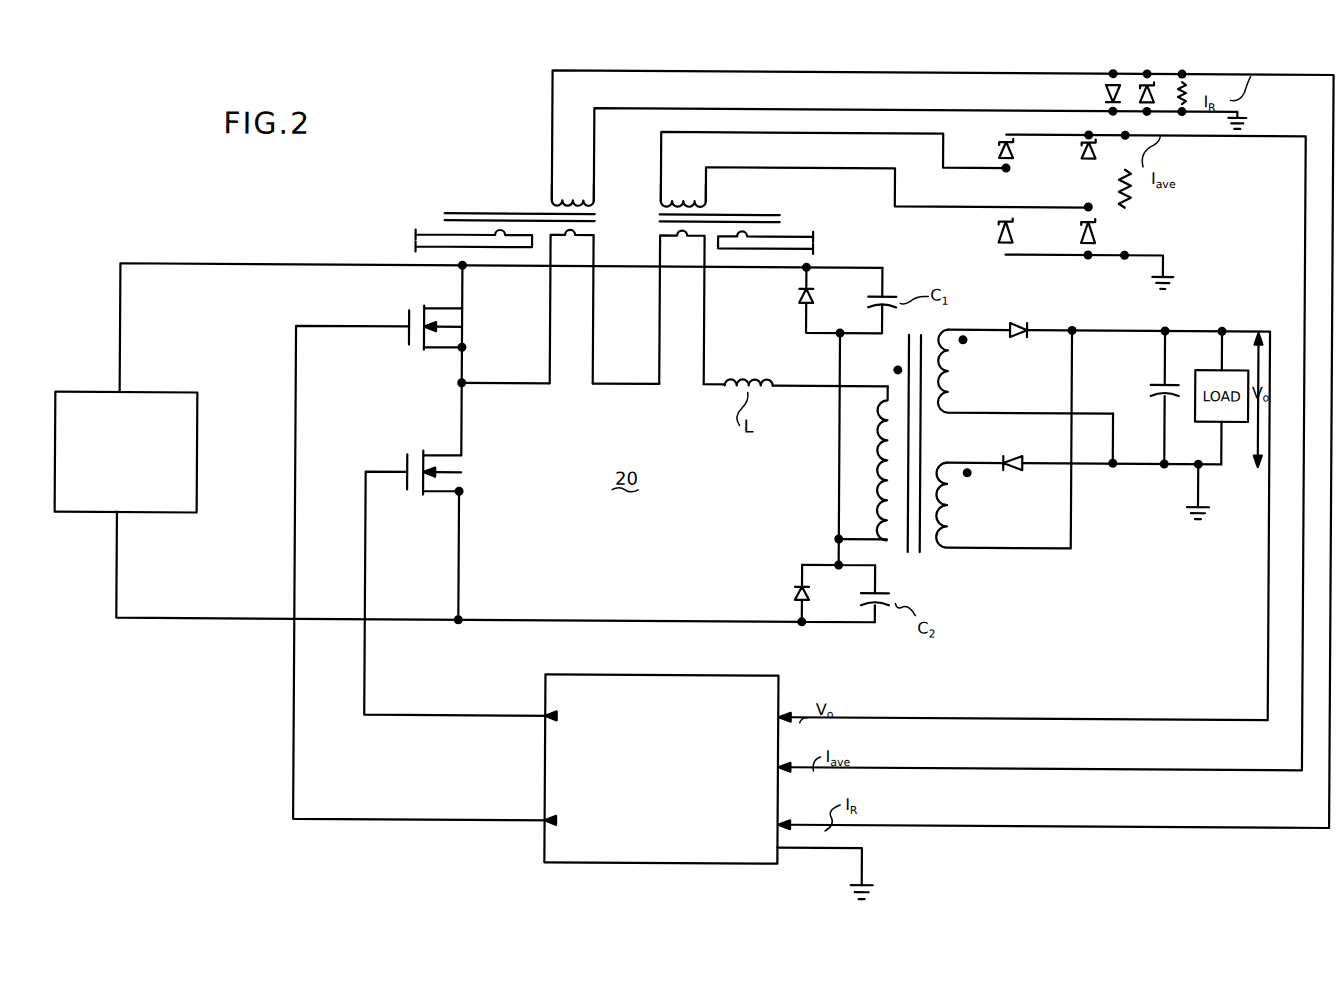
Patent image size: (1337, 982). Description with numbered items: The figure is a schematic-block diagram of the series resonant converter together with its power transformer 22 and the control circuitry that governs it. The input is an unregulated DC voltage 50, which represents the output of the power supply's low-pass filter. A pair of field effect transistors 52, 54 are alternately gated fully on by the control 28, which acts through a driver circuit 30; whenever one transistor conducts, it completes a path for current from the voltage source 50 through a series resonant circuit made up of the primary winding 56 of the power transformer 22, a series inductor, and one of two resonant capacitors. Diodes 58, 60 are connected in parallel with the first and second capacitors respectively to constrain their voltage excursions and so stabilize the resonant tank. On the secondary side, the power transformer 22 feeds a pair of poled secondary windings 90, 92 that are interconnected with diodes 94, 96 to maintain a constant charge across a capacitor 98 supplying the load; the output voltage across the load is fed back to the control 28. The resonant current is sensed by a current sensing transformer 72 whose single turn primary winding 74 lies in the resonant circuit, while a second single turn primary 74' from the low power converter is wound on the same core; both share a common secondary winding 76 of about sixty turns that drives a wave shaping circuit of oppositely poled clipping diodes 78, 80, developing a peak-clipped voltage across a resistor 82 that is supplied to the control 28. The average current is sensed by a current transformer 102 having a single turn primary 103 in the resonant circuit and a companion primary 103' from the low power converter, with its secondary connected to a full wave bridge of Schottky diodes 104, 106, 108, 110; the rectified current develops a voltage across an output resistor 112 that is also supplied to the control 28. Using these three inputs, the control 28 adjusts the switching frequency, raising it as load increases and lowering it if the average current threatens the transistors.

The power transformer 22 is at (922, 554).
The control 28 is at (661, 752).
The driver circuit 30 is at (644, 686).
The unregulated DC voltage 50 is at (90, 500).
The field effect transistor 52 is at (460, 315).
The field effect transistor 54 is at (461, 462).
The primary winding 56 is at (875, 460).
The diode 58 is at (799, 293).
The diode 60 is at (797, 587).
The current sensing transformer 72 is at (541, 207).
The single turn primary winding 74 is at (572, 307).
The single turn primary winding 74' is at (473, 264).
The secondary winding 76 is at (571, 201).
The clipping diode 78 is at (1106, 88).
The clipping diode 80 is at (1140, 78).
The resistor 82 is at (1180, 83).
The secondary winding 90 is at (958, 504).
The secondary winding 92 is at (960, 364).
The diode 94 is at (1022, 314).
The diode 96 is at (1013, 449).
The capacitor 98 is at (1152, 381).
The current transformer 102 is at (711, 201).
The single turn primary 103 is at (682, 307).
The single turn primary winding 103' is at (765, 264).
The Schottky diode 104 is at (1001, 144).
The Schottky diode 106 is at (1081, 148).
The Schottky diode 108 is at (996, 226).
The Schottky diode 110 is at (1080, 226).
The output resistor 112 is at (1136, 188).